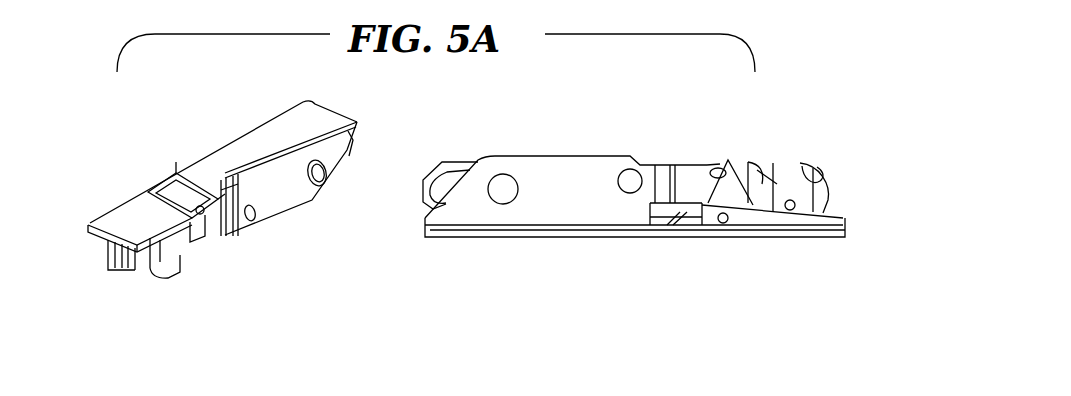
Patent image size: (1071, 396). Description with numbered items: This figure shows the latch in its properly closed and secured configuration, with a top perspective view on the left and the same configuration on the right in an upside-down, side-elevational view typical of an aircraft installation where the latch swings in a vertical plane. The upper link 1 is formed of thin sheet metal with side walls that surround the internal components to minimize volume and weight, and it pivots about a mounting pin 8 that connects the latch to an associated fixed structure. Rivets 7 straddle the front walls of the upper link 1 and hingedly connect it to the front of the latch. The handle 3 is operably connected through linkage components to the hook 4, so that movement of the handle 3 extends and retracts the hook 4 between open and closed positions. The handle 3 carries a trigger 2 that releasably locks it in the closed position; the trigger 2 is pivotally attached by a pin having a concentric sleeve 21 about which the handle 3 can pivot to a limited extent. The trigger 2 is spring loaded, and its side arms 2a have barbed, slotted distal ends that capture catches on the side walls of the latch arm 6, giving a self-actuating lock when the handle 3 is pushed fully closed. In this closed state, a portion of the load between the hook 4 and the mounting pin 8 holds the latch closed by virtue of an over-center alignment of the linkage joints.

The upper link 1 is at (280, 135).
The trigger 2 is at (175, 196).
The side arms 2a is at (782, 185).
The handle 3 is at (125, 217).
The hook 4 is at (828, 190).
The latch arm 6 is at (687, 180).
The rivets 7 is at (258, 217).
The mounting pin 8 is at (325, 177).
The concentric sleeve 21 is at (723, 224).